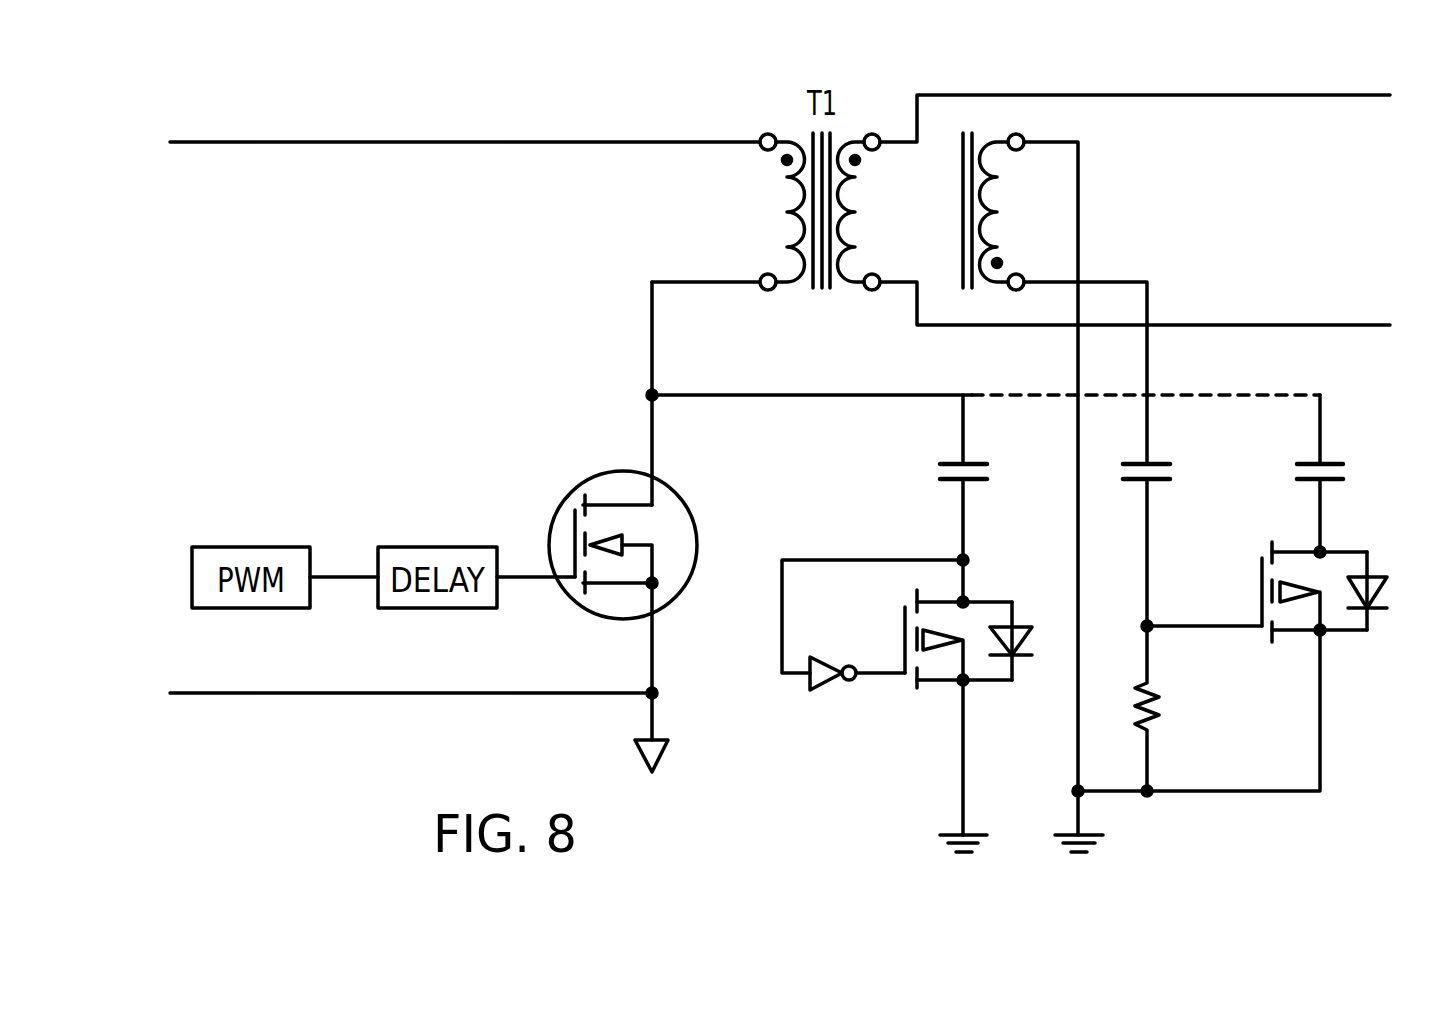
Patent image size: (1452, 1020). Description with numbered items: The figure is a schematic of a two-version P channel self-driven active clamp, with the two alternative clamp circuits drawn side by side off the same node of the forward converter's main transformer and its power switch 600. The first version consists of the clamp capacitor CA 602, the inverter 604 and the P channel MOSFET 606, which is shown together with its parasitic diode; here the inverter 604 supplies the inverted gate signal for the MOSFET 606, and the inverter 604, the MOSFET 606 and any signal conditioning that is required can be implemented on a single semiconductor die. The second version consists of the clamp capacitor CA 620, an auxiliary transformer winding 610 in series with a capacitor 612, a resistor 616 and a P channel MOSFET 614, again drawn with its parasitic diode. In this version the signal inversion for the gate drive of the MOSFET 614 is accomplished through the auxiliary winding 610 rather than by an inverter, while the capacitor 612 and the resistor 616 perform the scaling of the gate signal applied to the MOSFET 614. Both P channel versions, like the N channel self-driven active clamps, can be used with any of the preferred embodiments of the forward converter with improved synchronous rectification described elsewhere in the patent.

The power switch Q1 (MOSFET) 600 is at (582, 478).
The CA 602 is at (947, 458).
The inverter 604 is at (810, 688).
The P channel MOSFET 606 is at (945, 690).
The auxiliary winding 610 is at (993, 128).
The capacitor 612 is at (1162, 458).
The P channel MOSFET 614 is at (1340, 643).
The resistor 616 is at (1157, 693).
The CA 620 is at (1333, 460).